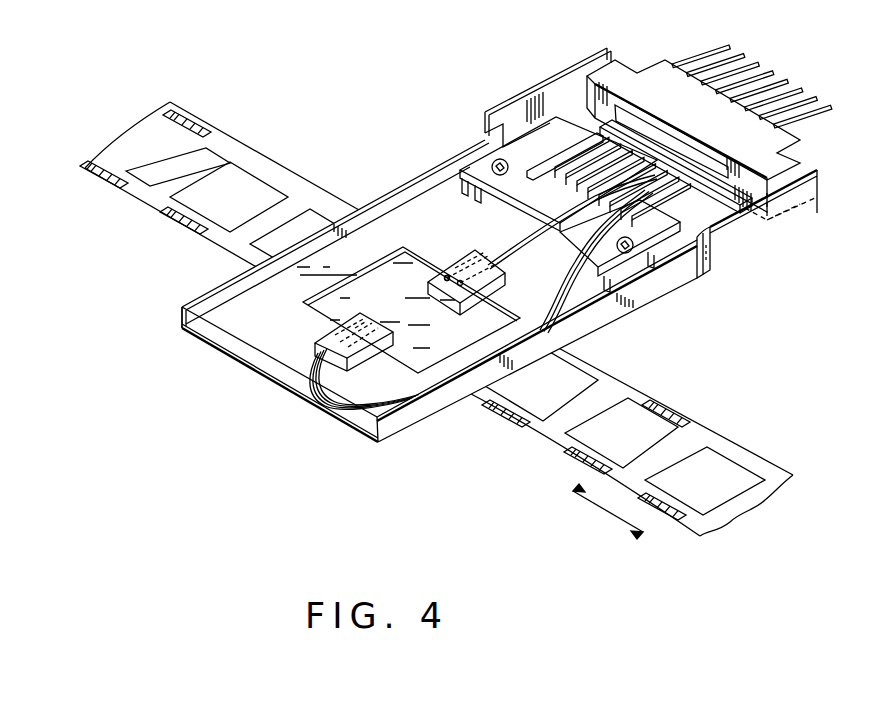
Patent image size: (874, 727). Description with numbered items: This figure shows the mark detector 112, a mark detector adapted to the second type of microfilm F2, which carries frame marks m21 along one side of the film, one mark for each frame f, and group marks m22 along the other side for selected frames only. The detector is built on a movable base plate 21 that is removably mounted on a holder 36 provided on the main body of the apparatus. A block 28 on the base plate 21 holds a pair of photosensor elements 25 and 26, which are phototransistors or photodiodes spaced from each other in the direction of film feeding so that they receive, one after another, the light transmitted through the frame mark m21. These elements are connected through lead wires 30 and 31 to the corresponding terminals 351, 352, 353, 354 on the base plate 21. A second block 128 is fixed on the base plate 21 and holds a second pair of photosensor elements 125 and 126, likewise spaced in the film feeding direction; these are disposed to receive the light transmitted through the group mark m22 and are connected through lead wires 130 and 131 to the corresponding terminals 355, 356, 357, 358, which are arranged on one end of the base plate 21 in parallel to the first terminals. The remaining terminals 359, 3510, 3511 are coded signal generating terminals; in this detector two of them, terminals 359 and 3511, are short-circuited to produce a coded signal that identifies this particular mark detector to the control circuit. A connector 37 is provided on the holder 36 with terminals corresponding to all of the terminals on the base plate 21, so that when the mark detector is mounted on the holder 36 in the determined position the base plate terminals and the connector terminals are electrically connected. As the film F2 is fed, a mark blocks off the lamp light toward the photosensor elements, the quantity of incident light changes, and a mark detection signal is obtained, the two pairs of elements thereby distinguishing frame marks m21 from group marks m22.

The base plate 21 is at (215, 333).
The mark detector 112 is at (195, 302).
The photosensor element 25 is at (303, 301).
The photosensor element 26 is at (370, 330).
The block 28 is at (318, 333).
The lead wire 30 is at (312, 395).
The lead wire 31 is at (340, 408).
The photosensor element 125 is at (460, 281).
The photosensor element 126 is at (445, 275).
The block 128 is at (484, 310).
The lead wire 130 is at (527, 251).
The lead wire 131 is at (499, 250).
The terminal 351 is at (714, 230).
The terminal 352 is at (660, 233).
The terminal 353 is at (637, 240).
The terminal 354 is at (660, 170).
The terminal 355 is at (617, 170).
The terminal 356 is at (605, 130).
The terminal 357 is at (592, 185).
The terminal 358 is at (598, 180).
The coded signal generating terminal 359 is at (590, 167).
The coded signal generating terminal 3510 is at (557, 157).
The coded signal generating terminal 3511 is at (543, 158).
The holder 36 is at (788, 220).
The connector 37 is at (667, 62).
The frame mark m21 is at (668, 545).
The group mark m22 is at (676, 393).
The frame f is at (667, 430).
The second microfilm F2 is at (770, 468).